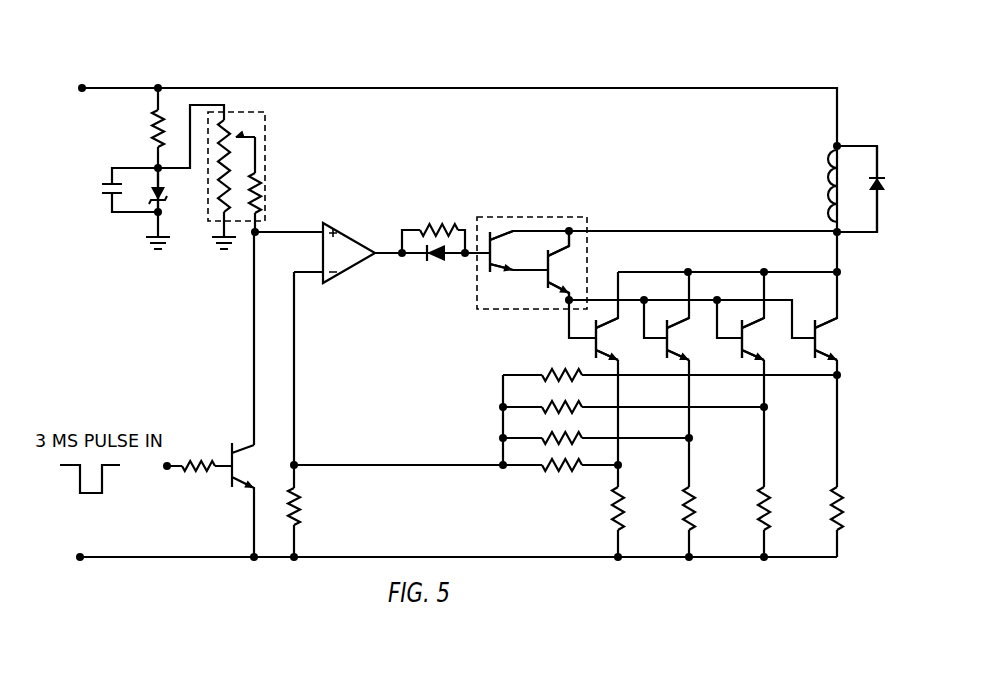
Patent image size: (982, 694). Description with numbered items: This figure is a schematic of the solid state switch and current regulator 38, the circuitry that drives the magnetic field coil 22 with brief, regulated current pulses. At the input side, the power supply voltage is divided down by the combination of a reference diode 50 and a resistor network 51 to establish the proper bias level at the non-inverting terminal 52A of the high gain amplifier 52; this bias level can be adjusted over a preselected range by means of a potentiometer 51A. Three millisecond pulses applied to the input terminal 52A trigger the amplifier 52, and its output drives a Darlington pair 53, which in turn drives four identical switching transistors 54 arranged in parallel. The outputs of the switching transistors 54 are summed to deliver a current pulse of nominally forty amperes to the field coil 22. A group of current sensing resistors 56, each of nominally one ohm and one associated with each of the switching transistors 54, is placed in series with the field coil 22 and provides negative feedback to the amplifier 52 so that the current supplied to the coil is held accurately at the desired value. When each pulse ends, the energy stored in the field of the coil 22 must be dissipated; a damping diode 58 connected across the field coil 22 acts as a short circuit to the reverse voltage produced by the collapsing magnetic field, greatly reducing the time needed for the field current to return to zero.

The solid state switch and current regulator 38 is at (130, 50).
The reference diode 50 is at (152, 185).
The potentiometer 51A is at (250, 132).
The resistor network 51 is at (266, 198).
The high gain amplifier 52 is at (349, 268).
The non-inverting terminal 52A is at (323, 225).
The Darlington pair 53 is at (545, 217).
The switching transistors 54 is at (592, 344).
The current sensing resistors 56 is at (610, 512).
The field coil 22 is at (827, 182).
The damping diode 58 is at (878, 192).